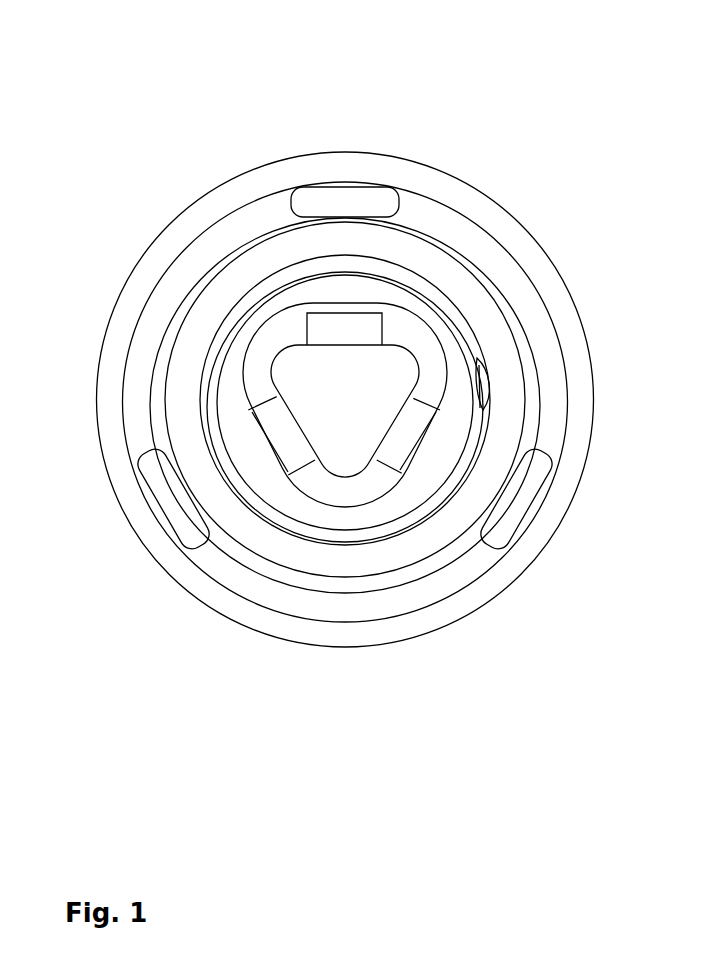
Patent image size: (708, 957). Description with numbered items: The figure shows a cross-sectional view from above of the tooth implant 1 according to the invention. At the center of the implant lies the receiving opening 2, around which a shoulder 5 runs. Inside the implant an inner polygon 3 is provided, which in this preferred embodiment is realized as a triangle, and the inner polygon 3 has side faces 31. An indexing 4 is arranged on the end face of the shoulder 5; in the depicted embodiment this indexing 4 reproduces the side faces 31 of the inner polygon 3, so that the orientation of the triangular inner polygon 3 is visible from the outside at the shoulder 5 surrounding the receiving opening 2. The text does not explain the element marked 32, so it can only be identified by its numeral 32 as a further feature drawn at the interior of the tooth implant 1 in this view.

The tooth implant 1 is at (130, 123).
The receiving opening 2 is at (462, 400).
The inner polygon 3 is at (430, 360).
The side faces 31 is at (408, 433).
The central opening 32 is at (345, 492).
The indexing 4 is at (357, 200).
The shoulder 5 is at (500, 578).